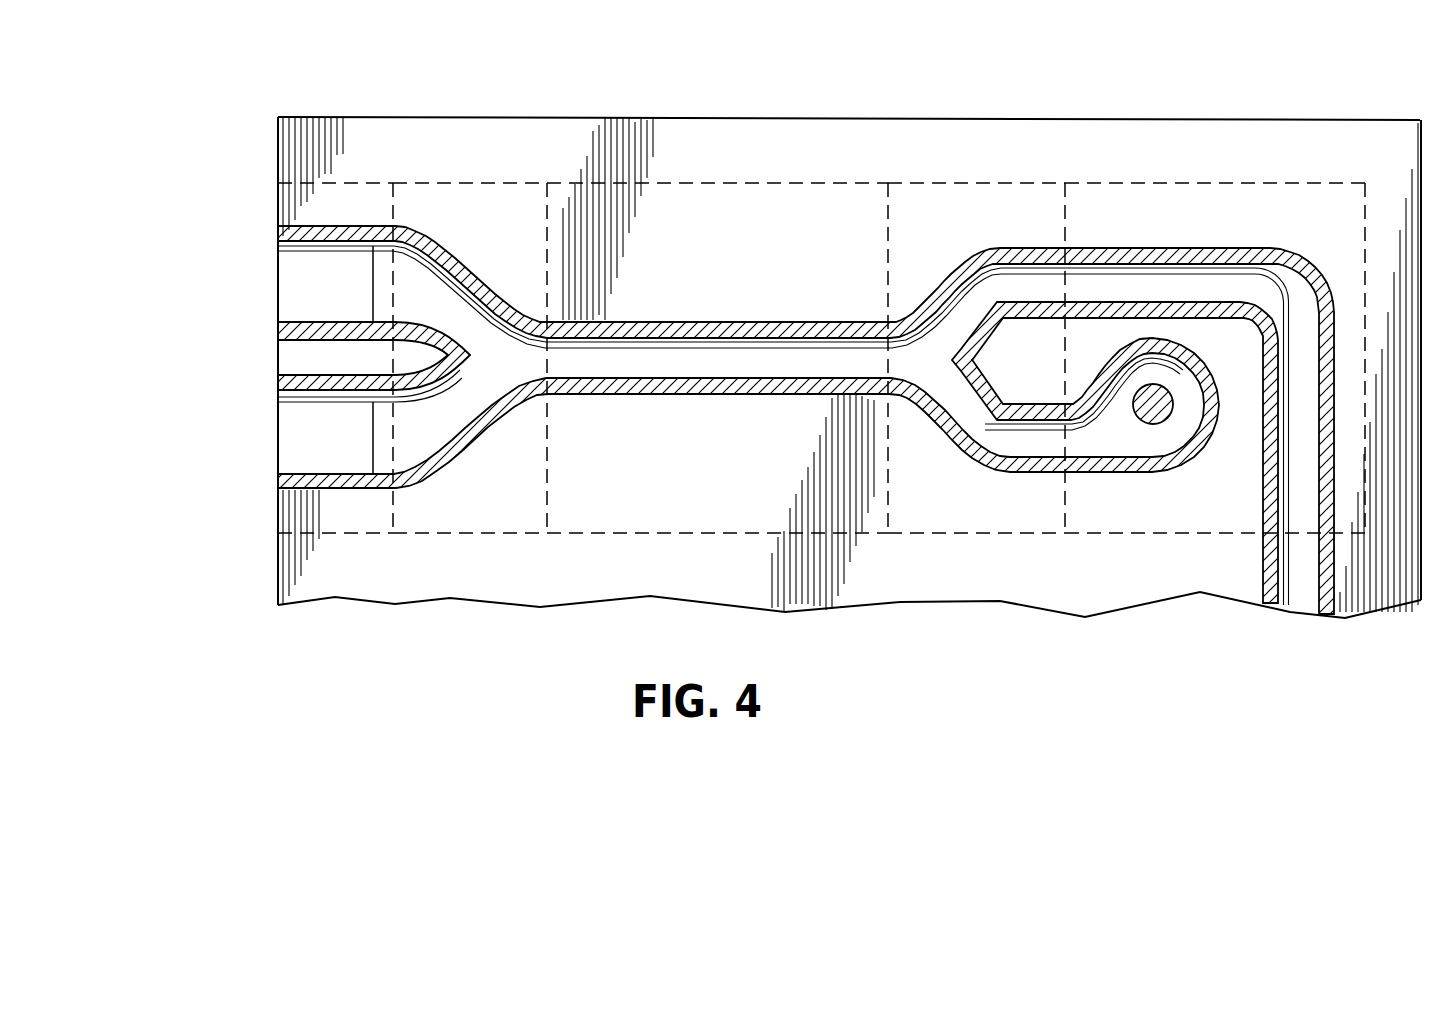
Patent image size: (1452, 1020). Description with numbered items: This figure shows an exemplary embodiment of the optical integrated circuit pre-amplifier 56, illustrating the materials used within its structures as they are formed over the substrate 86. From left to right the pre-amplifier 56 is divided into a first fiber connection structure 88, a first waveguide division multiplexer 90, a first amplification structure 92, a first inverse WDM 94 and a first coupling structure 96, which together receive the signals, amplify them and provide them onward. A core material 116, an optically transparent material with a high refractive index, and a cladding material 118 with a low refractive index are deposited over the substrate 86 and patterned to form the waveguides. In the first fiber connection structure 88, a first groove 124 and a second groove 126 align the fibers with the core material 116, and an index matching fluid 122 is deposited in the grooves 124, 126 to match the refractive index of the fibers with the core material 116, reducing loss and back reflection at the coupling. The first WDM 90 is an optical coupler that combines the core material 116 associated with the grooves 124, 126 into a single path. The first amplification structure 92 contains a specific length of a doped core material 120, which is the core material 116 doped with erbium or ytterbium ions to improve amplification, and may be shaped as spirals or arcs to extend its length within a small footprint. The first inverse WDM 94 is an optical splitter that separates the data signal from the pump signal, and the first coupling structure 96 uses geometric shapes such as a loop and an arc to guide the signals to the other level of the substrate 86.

The OIC pre-amplifier 56 is at (341, 100).
The substrate 86 is at (1100, 115).
The first fiber connection structure 88 is at (340, 182).
The first waveguide division multiplexer (WDM) 90 is at (470, 182).
The first amplification structure 92 is at (675, 182).
The first inverse WDM 94 is at (957, 182).
The first coupling structure 96 is at (1180, 182).
The core material 116 is at (427, 448).
The cladding material 118 is at (443, 252).
The doped core material 120 is at (692, 347).
The index matching fluid 122 is at (290, 292).
The first groove 124 is at (272, 276).
The second groove 126 is at (272, 434).